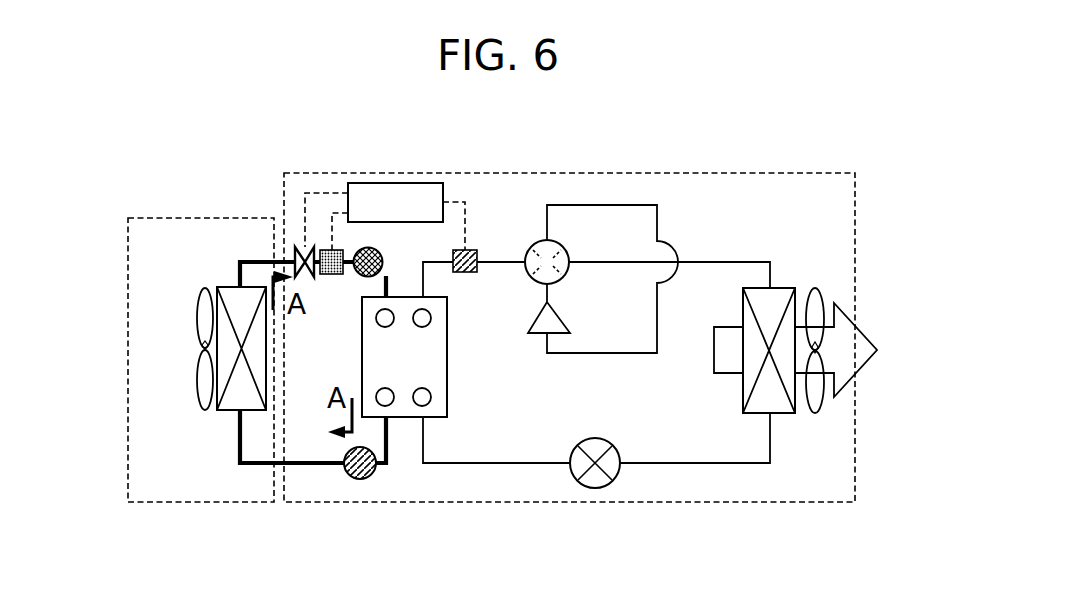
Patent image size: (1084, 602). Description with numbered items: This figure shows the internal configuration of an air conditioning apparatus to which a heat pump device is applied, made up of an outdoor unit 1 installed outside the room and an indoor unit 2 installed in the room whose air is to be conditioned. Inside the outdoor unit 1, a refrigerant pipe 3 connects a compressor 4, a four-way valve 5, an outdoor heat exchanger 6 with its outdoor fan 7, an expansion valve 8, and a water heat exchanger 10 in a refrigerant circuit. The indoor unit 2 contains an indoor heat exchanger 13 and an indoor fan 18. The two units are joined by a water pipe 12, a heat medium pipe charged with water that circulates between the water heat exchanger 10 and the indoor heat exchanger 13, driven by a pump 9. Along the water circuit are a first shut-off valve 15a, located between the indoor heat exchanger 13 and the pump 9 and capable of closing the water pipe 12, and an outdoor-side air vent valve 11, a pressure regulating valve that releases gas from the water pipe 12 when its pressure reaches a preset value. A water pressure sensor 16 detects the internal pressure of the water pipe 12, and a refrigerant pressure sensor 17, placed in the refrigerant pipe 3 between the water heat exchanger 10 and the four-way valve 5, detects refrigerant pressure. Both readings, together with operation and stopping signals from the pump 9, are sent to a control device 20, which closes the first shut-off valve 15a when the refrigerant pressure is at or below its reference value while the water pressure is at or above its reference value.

The outdoor unit 1 is at (781, 172).
The indoor unit 2 is at (170, 217).
The refrigerant pipe 3 is at (720, 261).
The compressor 4 is at (562, 316).
The four-way valve 5 is at (538, 246).
The outdoor heat exchanger 6 is at (782, 287).
The outdoor fan 7 is at (817, 286).
The expansion valve 8 is at (594, 438).
The pump 9 is at (384, 252).
The water heat exchanger 10 is at (448, 362).
The outdoor-side air vent valve 11 is at (366, 479).
The water pipe 12 is at (295, 466).
The indoor heat exchanger 13 is at (225, 285).
The first shut-off valve 15a is at (302, 247).
The water pressure sensor 16 is at (330, 276).
The refrigerant pressure sensor 17 is at (471, 273).
The indoor fan 18 is at (202, 413).
The control device 20 is at (394, 183).